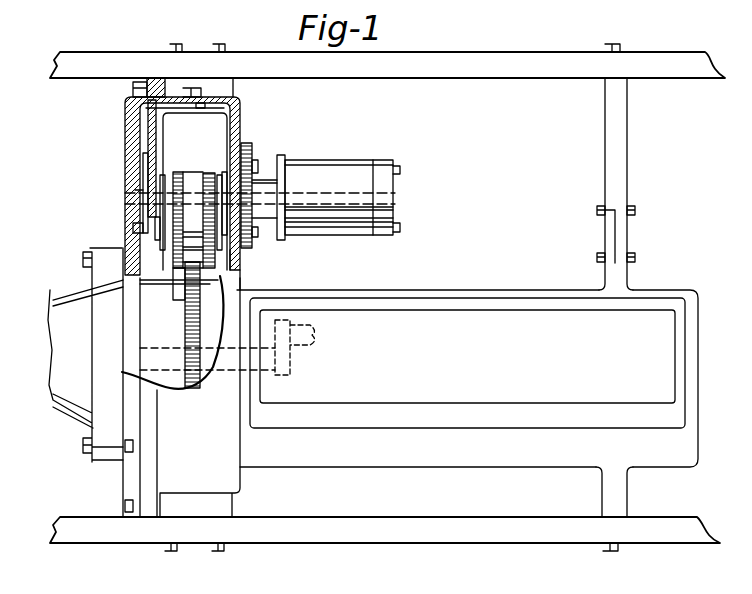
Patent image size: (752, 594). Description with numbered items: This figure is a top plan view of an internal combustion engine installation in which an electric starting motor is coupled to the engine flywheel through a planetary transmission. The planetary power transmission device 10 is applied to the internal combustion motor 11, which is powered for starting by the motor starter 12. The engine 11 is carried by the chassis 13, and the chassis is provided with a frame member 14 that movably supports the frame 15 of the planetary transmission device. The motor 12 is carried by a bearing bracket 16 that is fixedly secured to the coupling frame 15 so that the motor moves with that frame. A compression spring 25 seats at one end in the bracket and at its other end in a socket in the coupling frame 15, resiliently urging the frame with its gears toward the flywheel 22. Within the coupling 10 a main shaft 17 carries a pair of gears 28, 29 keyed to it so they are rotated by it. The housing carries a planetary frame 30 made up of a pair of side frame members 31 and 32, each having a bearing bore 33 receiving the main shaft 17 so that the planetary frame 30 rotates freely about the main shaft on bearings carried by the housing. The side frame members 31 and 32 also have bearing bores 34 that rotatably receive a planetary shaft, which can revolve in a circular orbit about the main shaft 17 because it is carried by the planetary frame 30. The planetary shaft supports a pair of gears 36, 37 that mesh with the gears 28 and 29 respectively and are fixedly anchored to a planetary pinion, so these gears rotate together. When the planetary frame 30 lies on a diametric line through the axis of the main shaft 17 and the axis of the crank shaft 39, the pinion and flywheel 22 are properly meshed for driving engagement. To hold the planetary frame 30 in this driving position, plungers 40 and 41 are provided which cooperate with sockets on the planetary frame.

The planetary power transmission device 10 is at (128, 184).
The internal combustion motor 11 is at (456, 308).
The motor starter 12 is at (364, 166).
The chassis 13 is at (272, 524).
The frame member 14 is at (140, 126).
The frame 15 is at (233, 132).
The bearing bracket 16 is at (262, 183).
The main shaft 17 is at (190, 194).
The flywheel 22 is at (185, 340).
The compression spring 25 is at (205, 107).
The gear 28 is at (180, 174).
The gear 29 is at (213, 175).
The planetary frame 30 is at (158, 172).
The side frame member 31 is at (166, 240).
The side frame member 32 is at (244, 254).
The bearing bore 33 is at (150, 142).
The bearing bore 34 is at (176, 254).
The gear 36 is at (180, 290).
The gear 37 is at (238, 281).
The crank shaft 39 is at (200, 382).
The plunger 40 is at (135, 228).
The plunger 41 is at (253, 234).